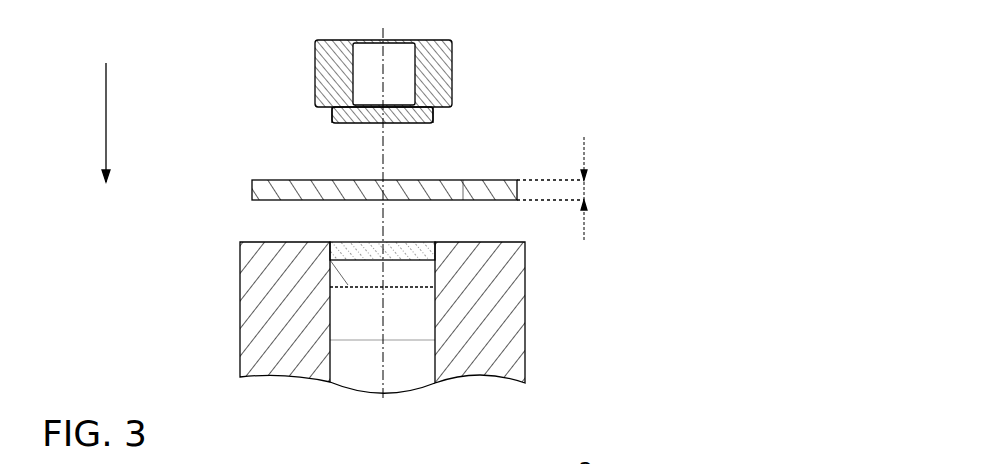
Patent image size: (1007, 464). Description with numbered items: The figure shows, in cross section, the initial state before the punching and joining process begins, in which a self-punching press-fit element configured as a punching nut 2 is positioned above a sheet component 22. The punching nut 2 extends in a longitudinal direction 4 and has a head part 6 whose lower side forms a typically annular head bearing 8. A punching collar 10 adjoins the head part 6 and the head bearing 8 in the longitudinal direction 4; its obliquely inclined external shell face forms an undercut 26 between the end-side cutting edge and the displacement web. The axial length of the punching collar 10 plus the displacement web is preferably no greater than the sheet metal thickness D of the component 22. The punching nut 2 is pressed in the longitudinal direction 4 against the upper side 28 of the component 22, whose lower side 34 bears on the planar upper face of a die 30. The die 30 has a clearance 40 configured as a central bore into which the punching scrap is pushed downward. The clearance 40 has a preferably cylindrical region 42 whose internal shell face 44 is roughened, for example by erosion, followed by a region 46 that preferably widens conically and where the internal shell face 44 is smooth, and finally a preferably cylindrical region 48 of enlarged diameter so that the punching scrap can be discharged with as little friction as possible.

The punching nut 2 is at (476, 48).
The longitudinal direction 4 is at (104, 117).
The head part 6 is at (327, 65).
The head bearing 8 is at (332, 108).
The punching collar 10 is at (432, 118).
The component 22 is at (264, 192).
The undercut 26 is at (333, 112).
The upper side 28 is at (463, 180).
The die 30 is at (397, 317).
The lower side 34 is at (490, 200).
The clearance 40 is at (355, 322).
The cylindrical region 42 is at (423, 252).
The internal shell face 44 is at (336, 291).
The conically widening region 46 is at (423, 273).
The cylindrical region of enlarged diameter 48 is at (423, 350).
The sheet metal thickness D is at (587, 142).